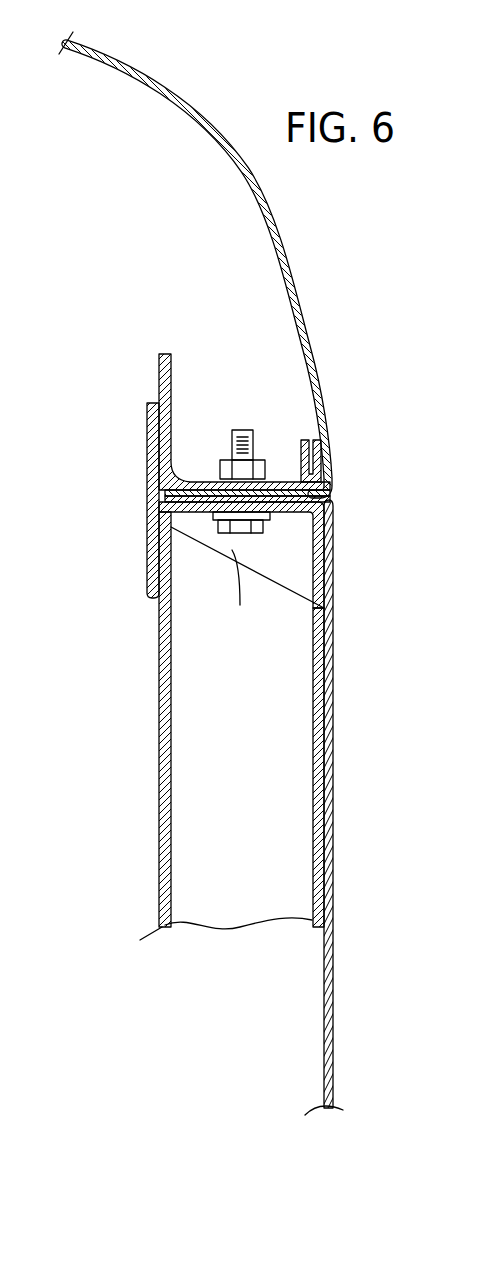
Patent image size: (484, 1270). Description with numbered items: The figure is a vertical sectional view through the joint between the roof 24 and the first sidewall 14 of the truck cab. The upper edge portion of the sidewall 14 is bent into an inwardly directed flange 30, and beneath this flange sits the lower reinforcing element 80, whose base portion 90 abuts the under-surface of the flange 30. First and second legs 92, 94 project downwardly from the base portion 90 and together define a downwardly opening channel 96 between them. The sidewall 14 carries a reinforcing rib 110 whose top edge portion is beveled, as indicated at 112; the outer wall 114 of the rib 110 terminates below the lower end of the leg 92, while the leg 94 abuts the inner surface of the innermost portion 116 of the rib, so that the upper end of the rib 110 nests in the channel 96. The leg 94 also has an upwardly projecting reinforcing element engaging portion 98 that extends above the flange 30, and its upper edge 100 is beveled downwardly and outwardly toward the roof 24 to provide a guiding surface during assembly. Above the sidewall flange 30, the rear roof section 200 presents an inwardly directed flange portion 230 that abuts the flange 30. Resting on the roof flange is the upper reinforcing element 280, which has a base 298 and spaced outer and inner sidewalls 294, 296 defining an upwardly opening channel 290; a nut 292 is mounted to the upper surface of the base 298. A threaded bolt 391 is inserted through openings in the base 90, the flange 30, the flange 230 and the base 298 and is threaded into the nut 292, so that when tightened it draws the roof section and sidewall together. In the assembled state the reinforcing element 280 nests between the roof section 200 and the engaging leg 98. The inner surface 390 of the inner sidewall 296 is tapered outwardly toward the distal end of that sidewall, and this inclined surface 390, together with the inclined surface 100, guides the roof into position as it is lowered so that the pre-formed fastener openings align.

The first sidewall 14 is at (333, 727).
The roof 24 is at (283, 225).
The inwardly directed flange 30 is at (328, 483).
The lower reinforcing element 80 is at (141, 492).
The base portion 90 is at (292, 512).
The first leg 92 is at (326, 578).
The second leg 94 is at (148, 562).
The downwardly opening channel 96 is at (300, 562).
The reinforcing element engaging portion 98 is at (147, 427).
The upper edge 100 is at (152, 407).
The reinforcing rib 110 is at (196, 671).
The beveled top edge portion 112 is at (238, 594).
The outer wall 114 is at (324, 654).
The innermost portion 116 is at (157, 617).
The rear roof section 200 is at (303, 306).
The inwardly directed flange portion 230 is at (212, 477).
The upper reinforcing element 280 is at (326, 467).
The upwardly opening channel 290 is at (220, 402).
The nut 292 is at (266, 460).
The outer sidewall 294 is at (306, 441).
The inner sidewall 296 is at (160, 362).
The base 298 is at (246, 430).
The inner surface 390 is at (162, 467).
The threaded bolt 391 is at (254, 448).